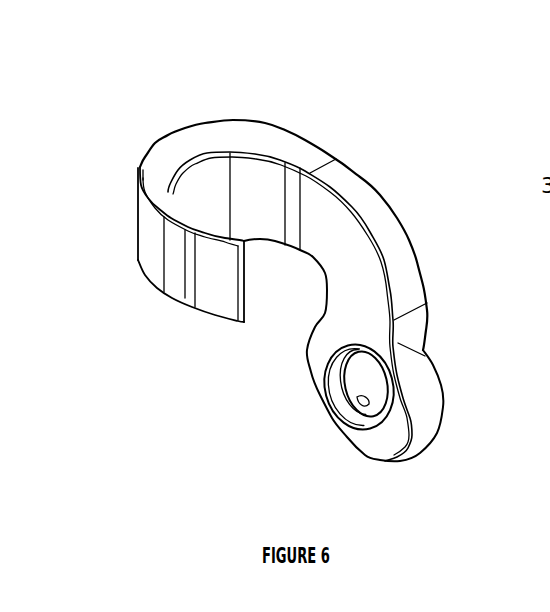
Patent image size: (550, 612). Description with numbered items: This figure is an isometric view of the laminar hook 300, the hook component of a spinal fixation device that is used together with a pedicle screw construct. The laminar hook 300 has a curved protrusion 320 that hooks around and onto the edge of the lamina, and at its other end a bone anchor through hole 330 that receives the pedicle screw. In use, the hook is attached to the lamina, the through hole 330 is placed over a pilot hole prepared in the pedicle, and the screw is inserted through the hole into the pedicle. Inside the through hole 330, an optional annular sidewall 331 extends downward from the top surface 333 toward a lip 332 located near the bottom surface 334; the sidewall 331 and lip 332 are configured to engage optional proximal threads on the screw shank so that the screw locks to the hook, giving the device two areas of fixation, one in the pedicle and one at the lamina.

The laminar hook 300 is at (183, 105).
The curved protrusion 320 is at (139, 167).
The bone anchor through hole 330 is at (368, 376).
The annular sidewall 331 is at (325, 384).
The lip 332 is at (365, 408).
The top surface 333 is at (340, 411).
The bottom surface 334 is at (441, 370).